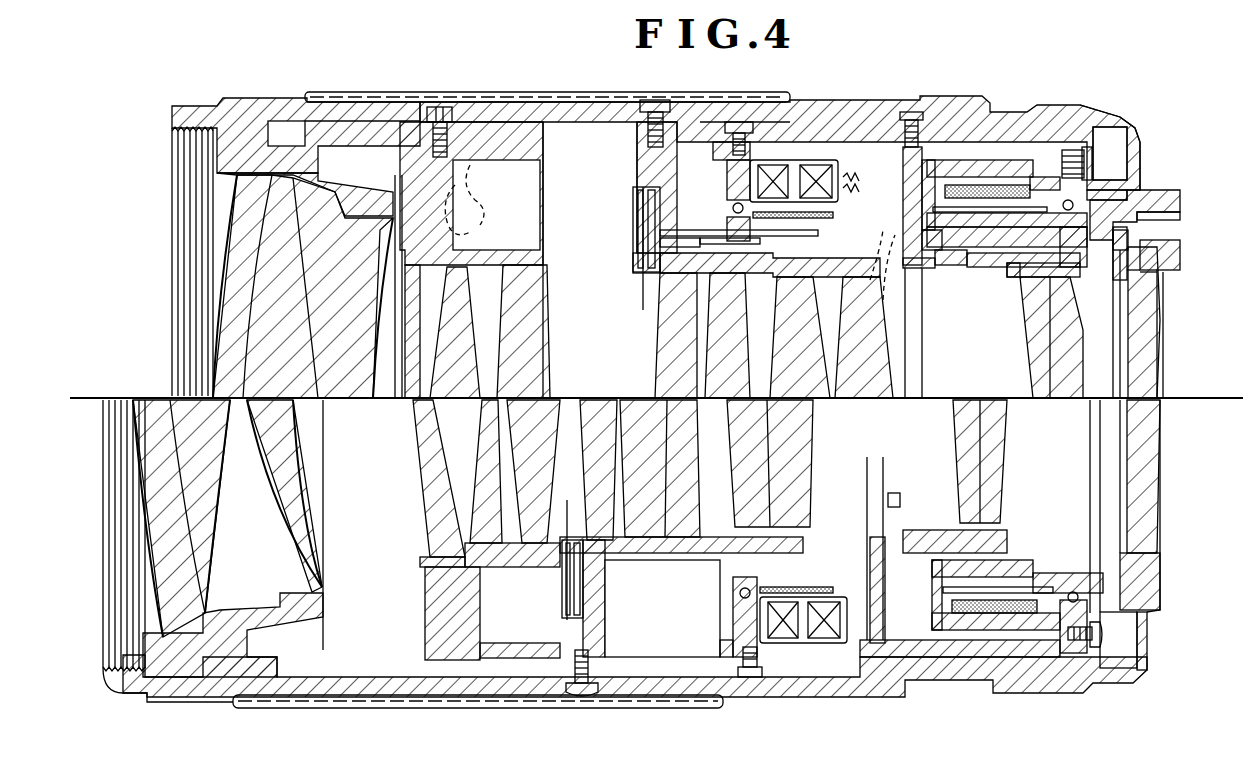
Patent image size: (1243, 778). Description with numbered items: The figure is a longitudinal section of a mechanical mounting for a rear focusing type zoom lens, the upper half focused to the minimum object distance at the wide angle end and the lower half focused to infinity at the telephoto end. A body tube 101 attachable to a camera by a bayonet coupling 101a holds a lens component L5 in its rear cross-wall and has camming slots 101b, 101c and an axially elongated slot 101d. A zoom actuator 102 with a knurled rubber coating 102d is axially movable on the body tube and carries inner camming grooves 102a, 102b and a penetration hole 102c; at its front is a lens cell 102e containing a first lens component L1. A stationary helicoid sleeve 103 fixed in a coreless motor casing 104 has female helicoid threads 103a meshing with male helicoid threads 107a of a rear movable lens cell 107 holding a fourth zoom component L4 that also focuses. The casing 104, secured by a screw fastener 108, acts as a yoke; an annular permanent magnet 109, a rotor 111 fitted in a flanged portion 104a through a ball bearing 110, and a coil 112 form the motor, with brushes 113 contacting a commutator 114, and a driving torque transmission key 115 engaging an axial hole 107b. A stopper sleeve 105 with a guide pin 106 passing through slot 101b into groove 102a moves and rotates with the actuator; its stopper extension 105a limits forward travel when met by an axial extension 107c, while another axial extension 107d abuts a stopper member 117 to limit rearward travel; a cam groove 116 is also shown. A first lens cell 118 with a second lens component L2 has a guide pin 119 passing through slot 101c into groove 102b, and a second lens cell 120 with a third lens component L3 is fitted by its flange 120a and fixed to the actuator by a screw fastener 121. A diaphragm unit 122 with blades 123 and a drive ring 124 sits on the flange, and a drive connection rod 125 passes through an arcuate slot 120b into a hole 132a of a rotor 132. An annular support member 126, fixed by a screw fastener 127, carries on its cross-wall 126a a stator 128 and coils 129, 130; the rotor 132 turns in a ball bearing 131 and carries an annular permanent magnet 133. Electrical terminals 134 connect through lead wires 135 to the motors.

The body tube 101 is at (1096, 116).
The bayonet coupling 101a is at (1135, 115).
The camming slot 101b is at (923, 270).
The camming slot 101c is at (455, 180).
The axially elongated slot 101d is at (562, 128).
The zoom actuator 102 is at (910, 120).
The camming groove 102a is at (955, 98).
The camming groove 102b is at (450, 100).
The penetration hole 102c is at (680, 110).
The knurled rubber coating 102d is at (540, 100).
The lens cell 102e is at (283, 125).
The stationary helicoid sleeve 103 is at (990, 268).
The female helicoid threads 103a is at (960, 270).
The coreless motor casing 104 is at (1073, 148).
The flanged portion 104a is at (1060, 185).
The stopper sleeve 105 is at (975, 160).
The stopper extension 105a is at (940, 255).
The guide pin 106 is at (912, 150).
The rear movable lens cell 107 is at (1060, 280).
The male helicoid threads 107a is at (1095, 290).
The axial hole 107b is at (1090, 283).
The axial extension 107c is at (1000, 272).
The axial extension 107d is at (1085, 285).
The screw fastener 108 is at (1127, 150).
The annular permanent magnet 109 is at (1012, 205).
The ball bearing 110 is at (1074, 205).
The rotor 111 is at (1130, 196).
The coil 112 is at (960, 185).
The brushes 113 is at (1068, 150).
The commutator 114 is at (1090, 140).
The driving torque transmission key 115 is at (1160, 283).
The cam groove 116 is at (900, 280).
The stopper member 117 is at (1130, 272).
The first lens cell 118 is at (490, 105).
The guide pin 119 is at (440, 105).
The second lens cell 120 is at (625, 115).
The flange 120a is at (640, 136).
The arcuate slot 120b is at (648, 290).
The screw fastener 121 is at (655, 100).
The diaphragm unit 122 is at (628, 232).
The blades 123 is at (642, 289).
The drive ring 124 is at (636, 200).
The drive connection rod 125 is at (753, 242).
The annular support member 126 is at (768, 160).
The cross-wall 126a is at (735, 183).
The screw fastener 127 is at (740, 122).
The stator 128 is at (830, 162).
The coil 129 is at (790, 165).
The coil 130 is at (905, 112).
The ball bearing 131 is at (732, 206).
The rotor 132 is at (750, 215).
The hole 132a is at (770, 275).
The annular permanent magnet 133 is at (788, 242).
The electrical terminals 134 is at (1155, 222).
The lead wires 135 is at (1181, 216).
The first lens component L1 is at (250, 330).
The second lens component L2 is at (480, 320).
The third lens component L3 is at (790, 350).
The fourth zoom component L4 is at (1075, 367).
The lens component L5 is at (1163, 382).